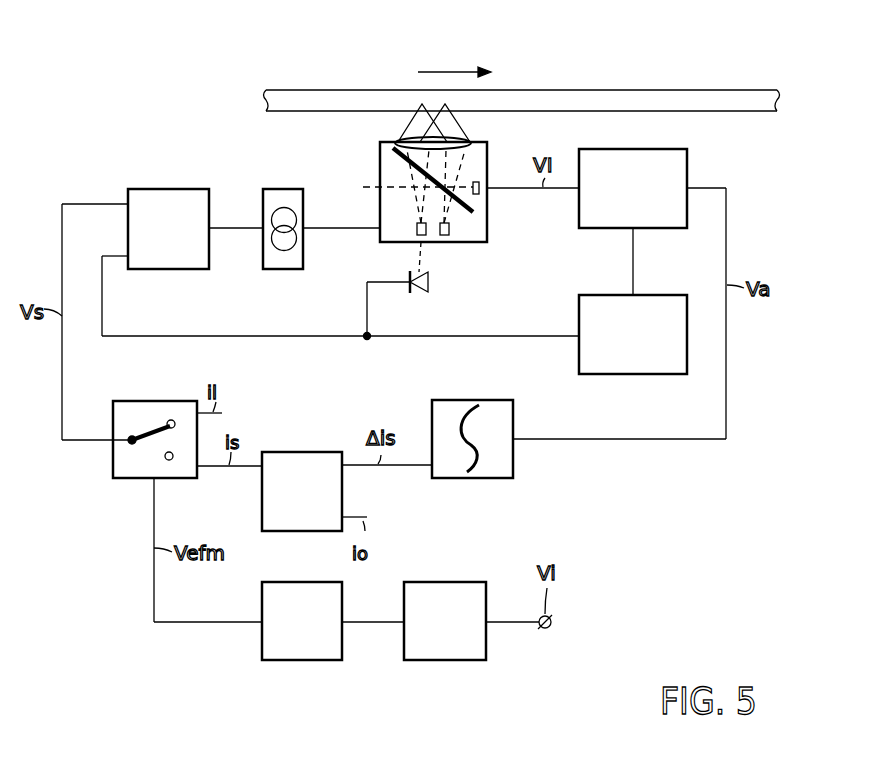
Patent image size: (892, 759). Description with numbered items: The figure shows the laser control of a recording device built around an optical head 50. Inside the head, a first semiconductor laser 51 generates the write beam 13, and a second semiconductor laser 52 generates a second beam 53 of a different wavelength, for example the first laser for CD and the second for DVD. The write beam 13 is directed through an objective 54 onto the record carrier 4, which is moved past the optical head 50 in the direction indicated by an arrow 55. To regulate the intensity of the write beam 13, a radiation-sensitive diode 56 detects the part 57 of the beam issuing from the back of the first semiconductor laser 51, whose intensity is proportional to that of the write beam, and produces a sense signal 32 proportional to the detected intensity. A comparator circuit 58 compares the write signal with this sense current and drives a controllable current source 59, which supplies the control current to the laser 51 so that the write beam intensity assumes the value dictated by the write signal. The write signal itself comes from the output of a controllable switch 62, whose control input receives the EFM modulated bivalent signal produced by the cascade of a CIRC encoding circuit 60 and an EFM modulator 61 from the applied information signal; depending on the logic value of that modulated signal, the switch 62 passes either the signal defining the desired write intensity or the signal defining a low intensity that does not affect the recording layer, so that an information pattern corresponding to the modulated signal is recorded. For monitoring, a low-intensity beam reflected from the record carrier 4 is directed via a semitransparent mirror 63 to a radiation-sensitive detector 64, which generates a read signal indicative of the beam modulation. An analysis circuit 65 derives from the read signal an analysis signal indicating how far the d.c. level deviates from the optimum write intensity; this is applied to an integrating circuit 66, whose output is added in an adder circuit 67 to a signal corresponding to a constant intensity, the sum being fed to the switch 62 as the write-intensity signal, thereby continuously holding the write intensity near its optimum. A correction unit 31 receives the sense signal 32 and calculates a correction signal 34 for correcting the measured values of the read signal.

The record carrier 4 is at (646, 88).
The write beam 13 is at (405, 186).
The correction unit 31 is at (637, 375).
The sense signal 32 is at (290, 337).
The correction signal 34 is at (634, 262).
The optical head 50 is at (383, 159).
The first semiconductor laser 51 is at (417, 233).
The second semiconductor laser 52 is at (449, 232).
The second beam 53 is at (454, 136).
The objective 54 is at (398, 141).
The arrow 55 is at (445, 71).
The radiation-sensitive diode 56 is at (428, 292).
The part of the beam 57 is at (424, 250).
The comparator circuit 58 is at (171, 188).
The controllable current source 59 is at (284, 188).
The CIRC encoding circuit 60 is at (448, 661).
The EFM modulator 61 is at (302, 661).
The controllable switch 62 is at (125, 479).
The semitransparent mirror 63 is at (473, 208).
The radiation-sensitive detector 64 is at (478, 182).
The analysis circuit 65 is at (687, 166).
The integrating circuit 66 is at (487, 479).
The adder circuit 67 is at (302, 451).